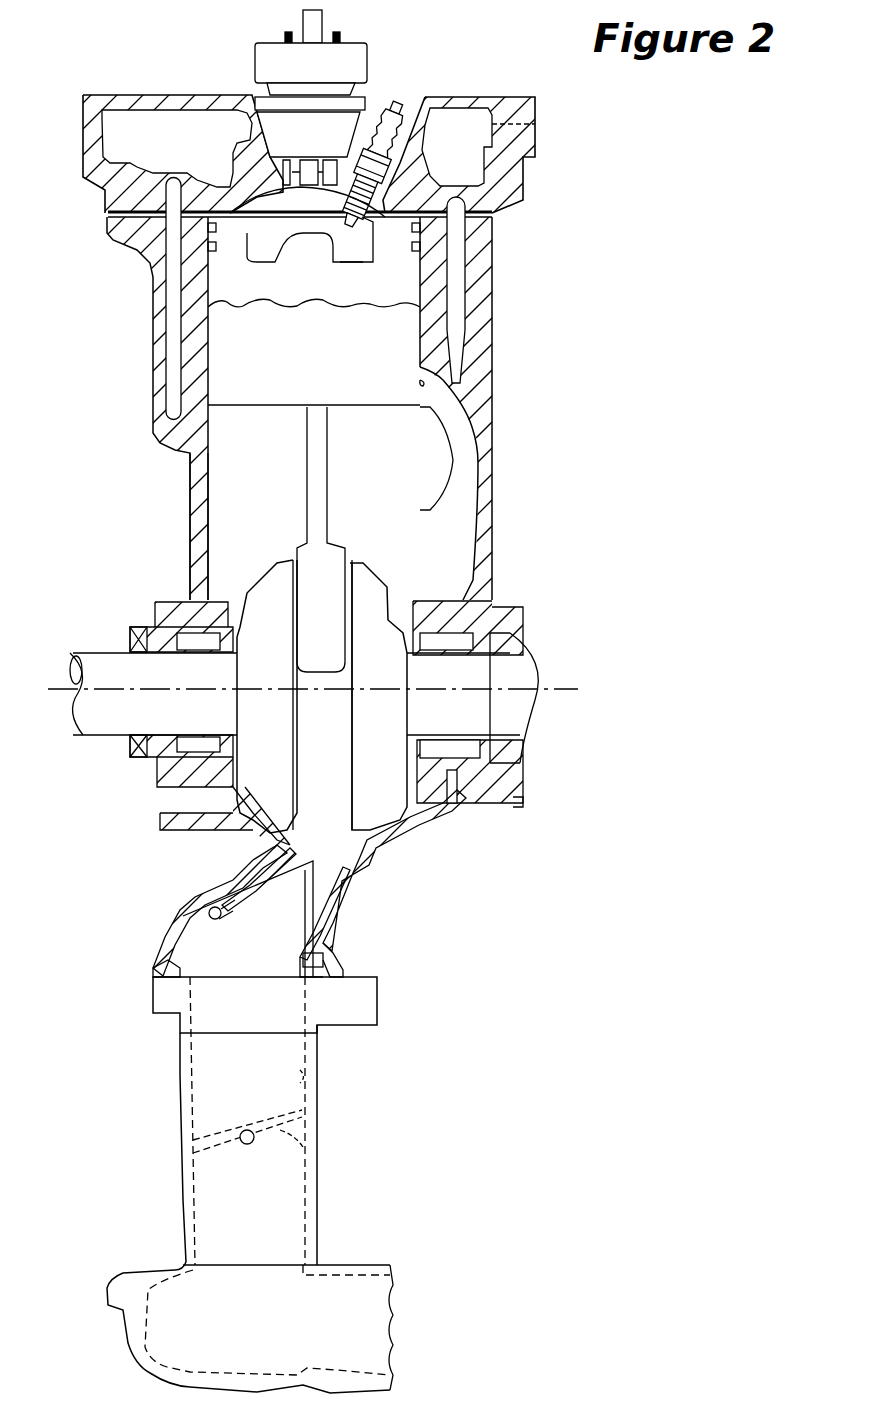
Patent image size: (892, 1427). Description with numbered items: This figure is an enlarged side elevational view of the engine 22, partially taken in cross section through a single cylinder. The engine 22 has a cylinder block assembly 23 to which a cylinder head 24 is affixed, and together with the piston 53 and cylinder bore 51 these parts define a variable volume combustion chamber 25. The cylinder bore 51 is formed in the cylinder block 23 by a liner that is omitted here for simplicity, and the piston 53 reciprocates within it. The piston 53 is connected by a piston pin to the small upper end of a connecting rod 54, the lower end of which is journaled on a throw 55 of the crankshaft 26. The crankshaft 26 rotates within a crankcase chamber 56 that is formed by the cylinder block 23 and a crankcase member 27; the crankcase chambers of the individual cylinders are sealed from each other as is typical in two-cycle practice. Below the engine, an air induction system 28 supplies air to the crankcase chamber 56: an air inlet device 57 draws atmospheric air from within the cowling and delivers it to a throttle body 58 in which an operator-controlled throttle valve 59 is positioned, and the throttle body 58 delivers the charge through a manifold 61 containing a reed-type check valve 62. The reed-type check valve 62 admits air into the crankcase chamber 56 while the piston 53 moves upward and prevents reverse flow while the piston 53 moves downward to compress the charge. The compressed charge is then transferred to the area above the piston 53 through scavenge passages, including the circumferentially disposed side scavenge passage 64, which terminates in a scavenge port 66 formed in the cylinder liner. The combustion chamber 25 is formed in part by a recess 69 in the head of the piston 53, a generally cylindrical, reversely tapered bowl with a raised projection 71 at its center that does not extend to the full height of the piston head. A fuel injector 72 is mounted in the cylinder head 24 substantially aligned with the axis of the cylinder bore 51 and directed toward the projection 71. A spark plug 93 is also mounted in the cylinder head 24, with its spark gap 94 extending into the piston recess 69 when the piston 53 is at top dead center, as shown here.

The engine 22 is at (520, 293).
The cylinder block assembly 23 is at (493, 370).
The cylinder head 24 is at (530, 180).
The combustion chamber 25 is at (277, 203).
The crankshaft 26 is at (100, 652).
The crankcase member 27 is at (423, 822).
The air induction system 28 is at (155, 1165).
The cylinder bore 51 is at (200, 467).
The piston 53 is at (347, 405).
The connecting rod 54 is at (307, 440).
The throw 55 is at (357, 560).
The crankcase chamber 56 is at (340, 748).
The air inlet device 57 is at (360, 1267).
The throttle body 58 is at (310, 1083).
The throttle valve 59 is at (305, 1150).
The manifold 61 is at (170, 938).
The reed-type check valve 62 is at (320, 905).
The side scavenge passage 64 is at (467, 440).
The scavenge port 66 is at (423, 383).
The recess 69 is at (258, 233).
The raised projection 71 is at (315, 233).
The fuel injector 72 is at (365, 57).
The spark plug 93 is at (398, 103).
The spark gap 94 is at (347, 220).